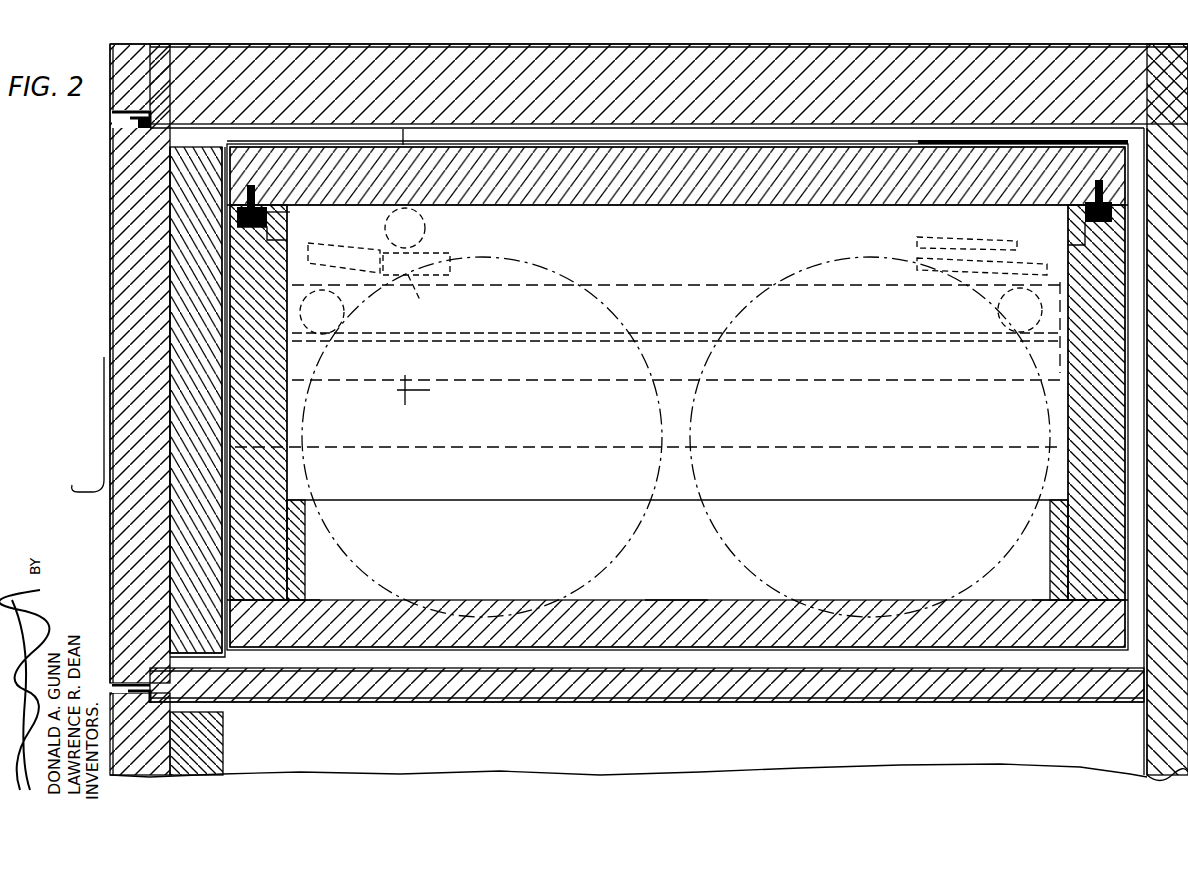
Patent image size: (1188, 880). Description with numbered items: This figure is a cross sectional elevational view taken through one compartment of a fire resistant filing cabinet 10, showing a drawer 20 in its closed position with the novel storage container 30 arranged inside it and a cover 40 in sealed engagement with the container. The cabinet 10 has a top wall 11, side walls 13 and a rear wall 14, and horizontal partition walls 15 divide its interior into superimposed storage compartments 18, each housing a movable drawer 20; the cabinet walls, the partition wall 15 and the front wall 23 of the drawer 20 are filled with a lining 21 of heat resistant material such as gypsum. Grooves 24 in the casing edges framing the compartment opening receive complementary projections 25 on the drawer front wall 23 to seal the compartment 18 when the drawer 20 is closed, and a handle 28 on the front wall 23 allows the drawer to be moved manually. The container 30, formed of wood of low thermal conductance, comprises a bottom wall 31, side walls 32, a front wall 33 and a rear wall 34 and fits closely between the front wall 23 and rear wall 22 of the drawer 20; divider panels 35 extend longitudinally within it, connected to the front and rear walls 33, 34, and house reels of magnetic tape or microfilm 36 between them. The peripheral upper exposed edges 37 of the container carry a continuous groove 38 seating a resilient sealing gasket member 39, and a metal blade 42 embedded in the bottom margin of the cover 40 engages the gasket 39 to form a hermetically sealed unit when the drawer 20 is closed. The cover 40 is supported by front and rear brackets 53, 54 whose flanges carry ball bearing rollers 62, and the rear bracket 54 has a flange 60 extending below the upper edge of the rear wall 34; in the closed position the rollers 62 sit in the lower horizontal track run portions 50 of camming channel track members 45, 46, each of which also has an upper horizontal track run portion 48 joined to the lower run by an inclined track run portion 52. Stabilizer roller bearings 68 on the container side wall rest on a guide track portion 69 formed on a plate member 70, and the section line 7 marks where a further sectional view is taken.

The filing cabinet 10 is at (1104, 30).
The top wall 11 is at (778, 40).
The side wall 13 is at (1075, 402).
The rear wall 14 is at (1072, 456).
The horizontal partition wall 15 is at (742, 695).
The storage compartment 18 is at (641, 140).
The drawer 20 is at (100, 517).
The lining of heat resistant material 21 is at (930, 62).
The rear wall of drawer 22 is at (1049, 566).
The front wall of drawer 23 is at (112, 300).
The groove 24 is at (113, 117).
The projection 25 is at (152, 112).
The handle 28 is at (102, 406).
The container 30 is at (997, 633).
The bottom wall of container 31 is at (334, 598).
The side wall of container 32 is at (668, 251).
The front wall of container 33 is at (290, 413).
The rear wall of container 34 is at (1078, 424).
The divider panel 35 is at (785, 500).
The reels of magnetic tape or microfilm 36 is at (571, 283).
The peripheral upper exposed edge 37 is at (655, 161).
The continuous groove 38 is at (290, 214).
The sealing gasket member 39 is at (288, 226).
The cover 40 is at (823, 140).
The metal blade 42 is at (237, 206).
The camming channel track member 45 is at (432, 247).
The camming channel track member 46 is at (925, 222).
The upper horizontal track run portion 48 is at (906, 278).
The lower horizontal track run portion 50 is at (452, 256).
The inclined track run portion 52 is at (350, 252).
The front cover bracket 53 is at (312, 142).
The rear cover bracket 54 is at (985, 143).
The flange 60 is at (1173, 46).
The ball bearing roller 62 is at (1046, 268).
The stabilizer roller bearing 68 is at (344, 317).
The guide track portion 69 is at (668, 336).
The plate member 70 is at (682, 285).
The section line 7 is at (420, 390).